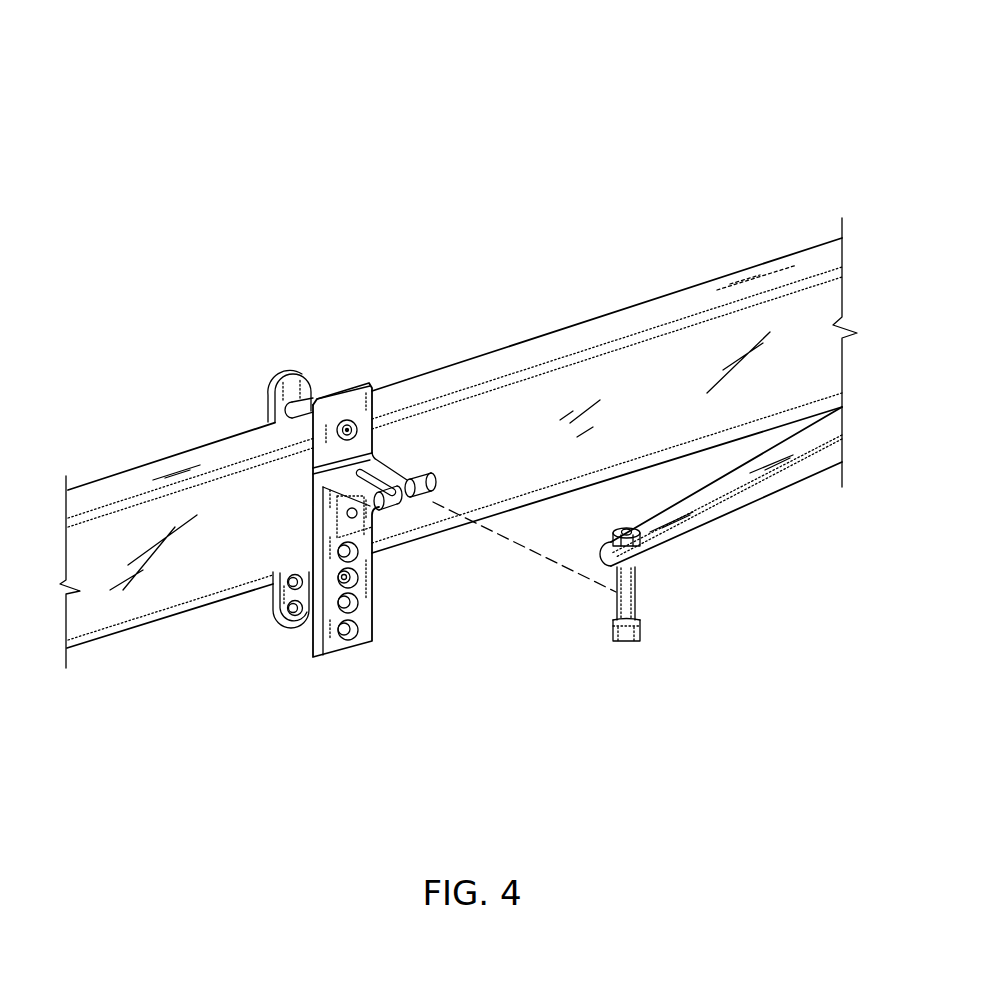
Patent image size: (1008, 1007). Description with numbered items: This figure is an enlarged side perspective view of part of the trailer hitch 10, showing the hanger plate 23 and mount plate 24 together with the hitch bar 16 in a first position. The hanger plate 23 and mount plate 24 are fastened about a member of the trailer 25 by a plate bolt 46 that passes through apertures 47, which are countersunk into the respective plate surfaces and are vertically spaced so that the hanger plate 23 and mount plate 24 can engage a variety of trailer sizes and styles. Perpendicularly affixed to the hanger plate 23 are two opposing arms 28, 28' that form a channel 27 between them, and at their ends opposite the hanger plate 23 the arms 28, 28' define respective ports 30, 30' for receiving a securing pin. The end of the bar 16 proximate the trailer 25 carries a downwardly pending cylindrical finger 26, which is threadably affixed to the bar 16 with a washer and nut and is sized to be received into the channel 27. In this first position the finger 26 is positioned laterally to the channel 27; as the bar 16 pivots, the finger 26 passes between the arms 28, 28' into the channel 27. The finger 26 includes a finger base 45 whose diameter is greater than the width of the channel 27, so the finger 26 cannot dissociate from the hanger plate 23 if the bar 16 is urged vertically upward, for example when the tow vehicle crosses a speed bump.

The trailer hitch 10 is at (242, 72).
The hitch bar 16 is at (763, 483).
The hanger plate 23 is at (357, 392).
The mount plate 24 is at (283, 380).
The trailer 25 is at (543, 346).
The cylindrical finger 26 is at (627, 598).
The channel 27 is at (410, 479).
The arm 28 is at (339, 479).
The arm 28' is at (387, 460).
The port 30 is at (392, 509).
The port 30' is at (453, 487).
The finger base 45 is at (632, 642).
The plate bolt 46 is at (303, 405).
The aperture 47 is at (298, 612).